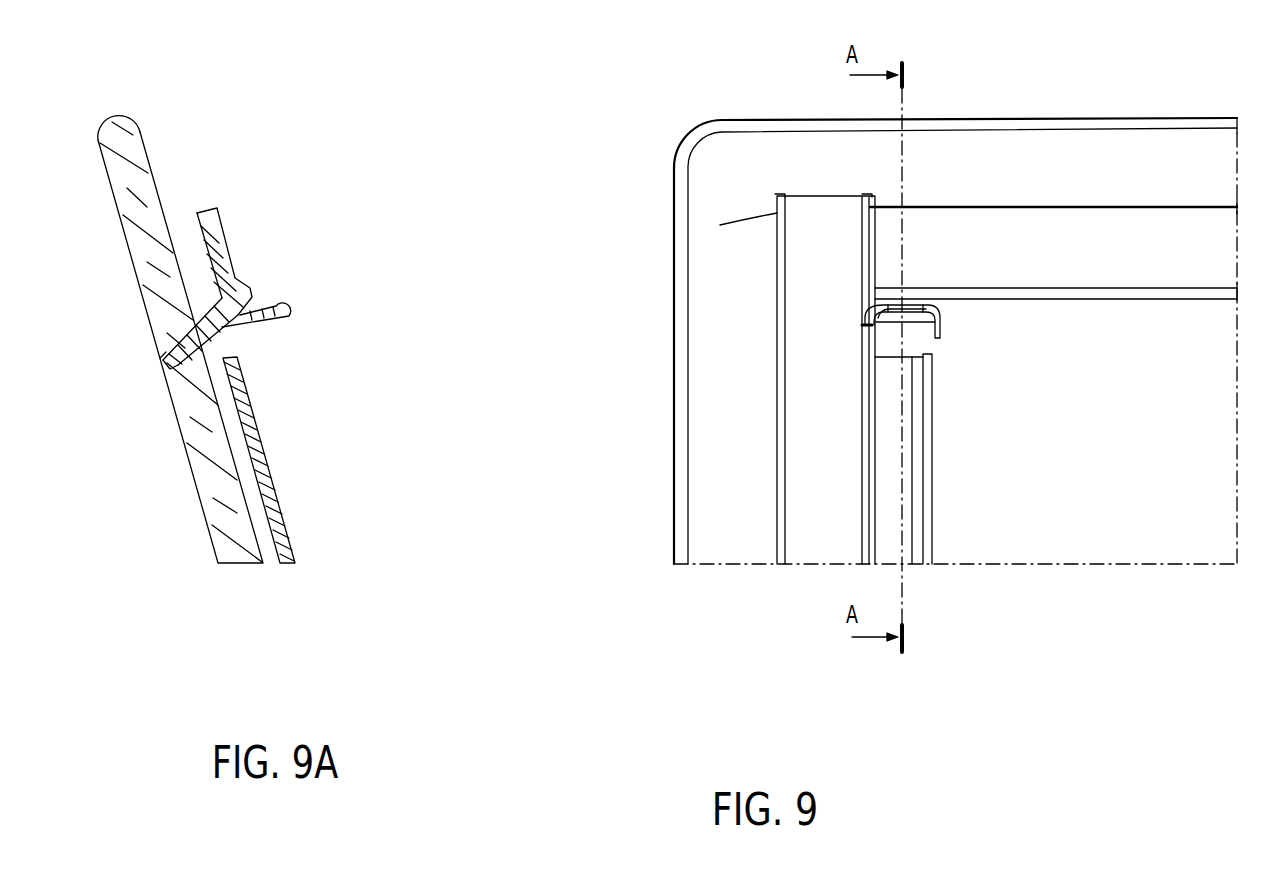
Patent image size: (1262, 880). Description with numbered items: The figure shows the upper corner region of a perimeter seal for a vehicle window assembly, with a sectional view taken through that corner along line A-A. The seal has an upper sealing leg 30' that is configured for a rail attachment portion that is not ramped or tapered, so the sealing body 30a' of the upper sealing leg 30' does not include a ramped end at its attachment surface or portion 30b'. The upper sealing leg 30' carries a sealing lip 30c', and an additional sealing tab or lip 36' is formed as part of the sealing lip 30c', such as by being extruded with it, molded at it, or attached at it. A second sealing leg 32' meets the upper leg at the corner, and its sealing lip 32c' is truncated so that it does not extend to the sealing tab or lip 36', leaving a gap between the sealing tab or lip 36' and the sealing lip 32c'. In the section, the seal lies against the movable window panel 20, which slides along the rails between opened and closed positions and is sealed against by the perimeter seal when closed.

In FIG. 9A, the movable window panel 20 is at (210, 498).
In FIG. 9, the movable window panel 20 is at (743, 163).
In FIG. 9A, the upper sealing leg 30' is at (218, 267).
In FIG. 9, the upper sealing leg 30' is at (1053, 221).
In FIG. 9A, the sealing body 30a' is at (250, 292).
In FIG. 9A, the attachment surface or portion 30b' is at (225, 222).
In FIG. 9, the attachment surface or portion 30b' is at (1053, 309).
In FIG. 9A, the sealing lip 30c' is at (138, 380).
In FIG. 9, the sealing leg 32' is at (739, 379).
In FIG. 9A, the sealing lip 32c' is at (292, 460).
In FIG. 9, the sealing lip 32c' is at (957, 459).
In FIG. 9A, the sealing tab or lip 36' is at (301, 307).
In FIG. 9, the sealing tab or lip 36' is at (946, 350).